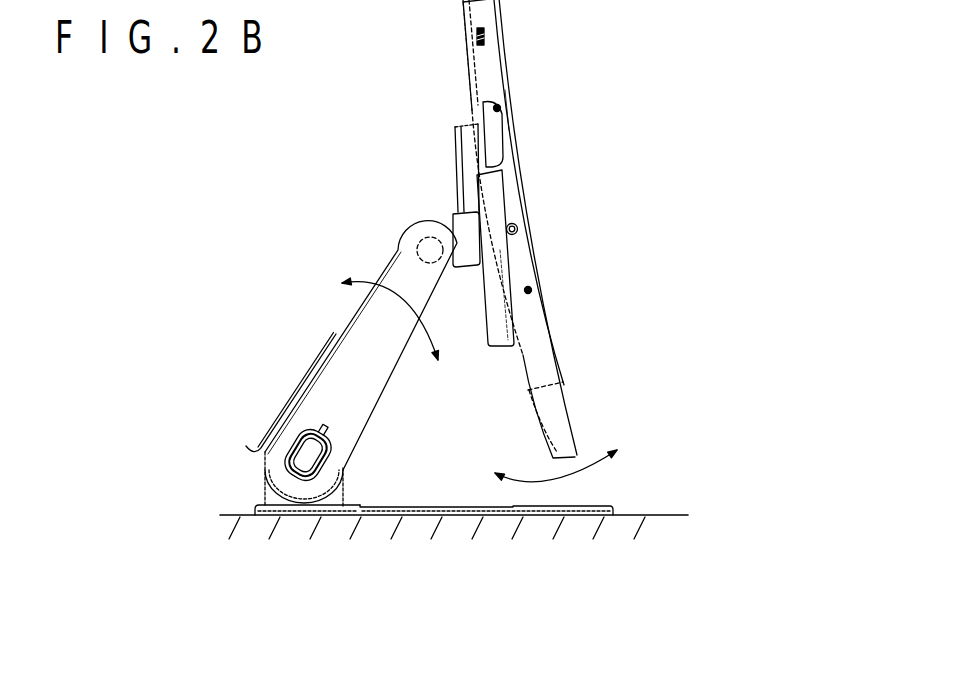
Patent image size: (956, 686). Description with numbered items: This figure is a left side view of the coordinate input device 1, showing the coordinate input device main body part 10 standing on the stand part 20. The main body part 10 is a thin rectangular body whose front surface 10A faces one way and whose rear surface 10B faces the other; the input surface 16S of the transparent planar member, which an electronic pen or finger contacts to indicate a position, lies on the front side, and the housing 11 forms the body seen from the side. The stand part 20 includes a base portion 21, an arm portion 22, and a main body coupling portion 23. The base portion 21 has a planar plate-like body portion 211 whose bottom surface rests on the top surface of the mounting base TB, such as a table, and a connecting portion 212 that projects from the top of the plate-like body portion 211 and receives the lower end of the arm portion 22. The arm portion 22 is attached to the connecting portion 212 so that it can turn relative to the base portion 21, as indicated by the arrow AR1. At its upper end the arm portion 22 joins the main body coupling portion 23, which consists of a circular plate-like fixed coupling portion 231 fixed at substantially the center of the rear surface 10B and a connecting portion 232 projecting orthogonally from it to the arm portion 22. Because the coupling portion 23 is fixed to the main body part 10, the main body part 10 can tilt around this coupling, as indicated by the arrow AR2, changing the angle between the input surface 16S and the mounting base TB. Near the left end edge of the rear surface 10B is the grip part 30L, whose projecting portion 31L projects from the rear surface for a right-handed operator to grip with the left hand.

The coordinate input device 1 is at (567, 372).
The coordinate input device main body part 10 is at (547, 330).
The front surface 10A is at (508, 62).
The rear surface 10B is at (477, 38).
The rear housing of display 11 is at (484, 78).
The input surface 16S is at (516, 113).
The stand part 20 is at (322, 347).
The base portion 21 is at (377, 586).
The plate-like body portion 211 is at (328, 513).
The connecting portion 212 is at (282, 504).
The arm portion 22 is at (352, 332).
The main body coupling portion 23 is at (435, 118).
The fixed coupling portion 231 is at (458, 153).
The connecting portion 232 is at (455, 219).
The grip part 30L is at (503, 173).
The projecting portion 31L is at (493, 192).
The arrow AR1 is at (366, 282).
The arrow AR2 is at (602, 468).
The mounting base TB is at (580, 533).